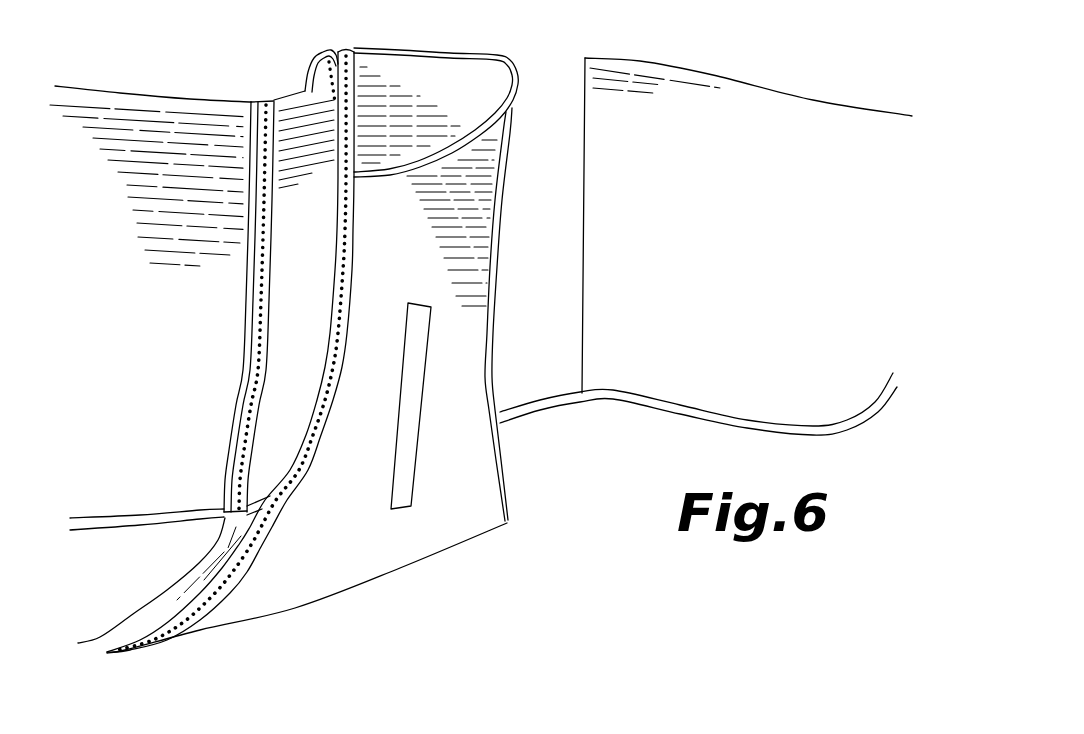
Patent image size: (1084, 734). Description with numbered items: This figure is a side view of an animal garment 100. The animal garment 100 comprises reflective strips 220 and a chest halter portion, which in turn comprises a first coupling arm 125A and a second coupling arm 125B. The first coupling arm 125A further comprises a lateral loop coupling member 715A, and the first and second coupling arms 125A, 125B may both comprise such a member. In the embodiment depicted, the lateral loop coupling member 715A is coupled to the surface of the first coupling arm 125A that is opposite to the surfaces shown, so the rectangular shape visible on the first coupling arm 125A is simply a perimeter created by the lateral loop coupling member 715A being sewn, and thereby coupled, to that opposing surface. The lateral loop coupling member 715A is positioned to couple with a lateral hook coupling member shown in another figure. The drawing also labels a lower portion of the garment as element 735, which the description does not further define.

The animal garment 100 is at (773, 68).
The first coupling arm 125A is at (516, 347).
The second coupling arm 125B is at (519, 119).
The reflective strips 220 is at (245, 375).
The lateral loop coupling member 715A is at (433, 457).
The lower edge panel 735 is at (296, 621).